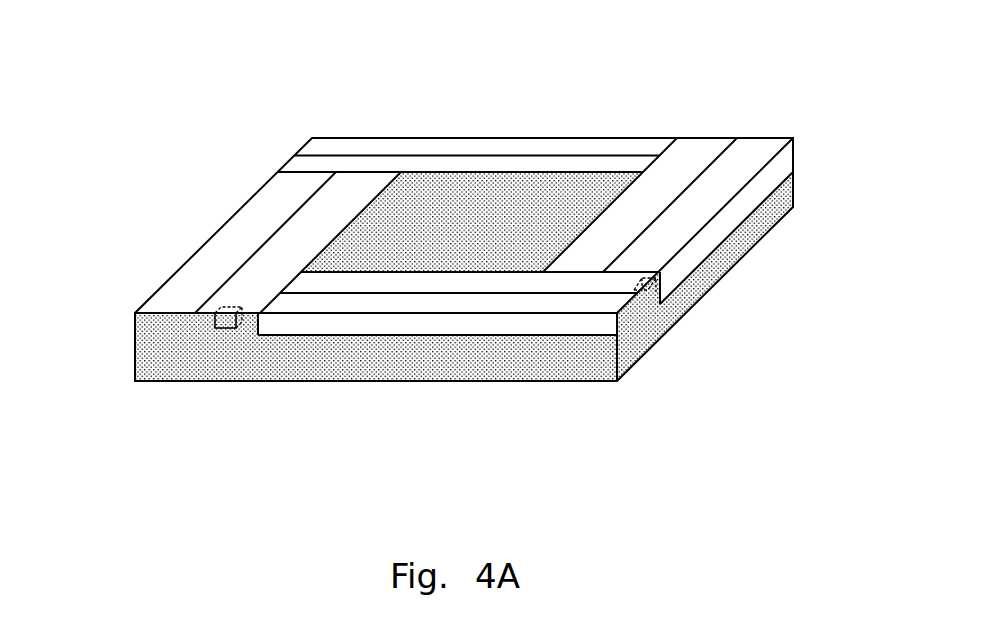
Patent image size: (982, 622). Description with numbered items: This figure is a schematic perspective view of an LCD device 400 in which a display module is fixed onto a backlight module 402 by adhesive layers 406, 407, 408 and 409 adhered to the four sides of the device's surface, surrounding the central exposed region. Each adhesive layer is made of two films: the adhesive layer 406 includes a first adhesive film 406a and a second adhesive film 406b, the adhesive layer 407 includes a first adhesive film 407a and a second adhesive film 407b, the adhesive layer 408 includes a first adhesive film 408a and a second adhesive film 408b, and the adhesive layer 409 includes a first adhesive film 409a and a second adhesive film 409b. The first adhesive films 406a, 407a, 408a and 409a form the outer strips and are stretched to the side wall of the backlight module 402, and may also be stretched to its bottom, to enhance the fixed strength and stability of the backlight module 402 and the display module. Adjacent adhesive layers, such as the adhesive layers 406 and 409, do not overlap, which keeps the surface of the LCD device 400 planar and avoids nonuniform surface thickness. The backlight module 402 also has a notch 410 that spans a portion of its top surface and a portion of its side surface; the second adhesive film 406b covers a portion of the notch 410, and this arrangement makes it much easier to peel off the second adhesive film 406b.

The LCD device 400 is at (278, 44).
The backlight module 402 is at (150, 355).
The adhesive layer 406 is at (223, 242).
The first adhesive film 406a is at (272, 206).
The second adhesive film 406b is at (283, 257).
The adhesive layer 407 is at (469, 98).
The first adhesive film 407a is at (458, 147).
The second adhesive film 407b is at (447, 78).
The adhesive layer 408 is at (725, 228).
The first adhesive film 408a is at (697, 205).
The second adhesive film 408b is at (608, 235).
The adhesive layer 409 is at (469, 392).
The first adhesive film 409a is at (393, 305).
The second adhesive film 409b is at (473, 283).
The notch 410 is at (223, 330).